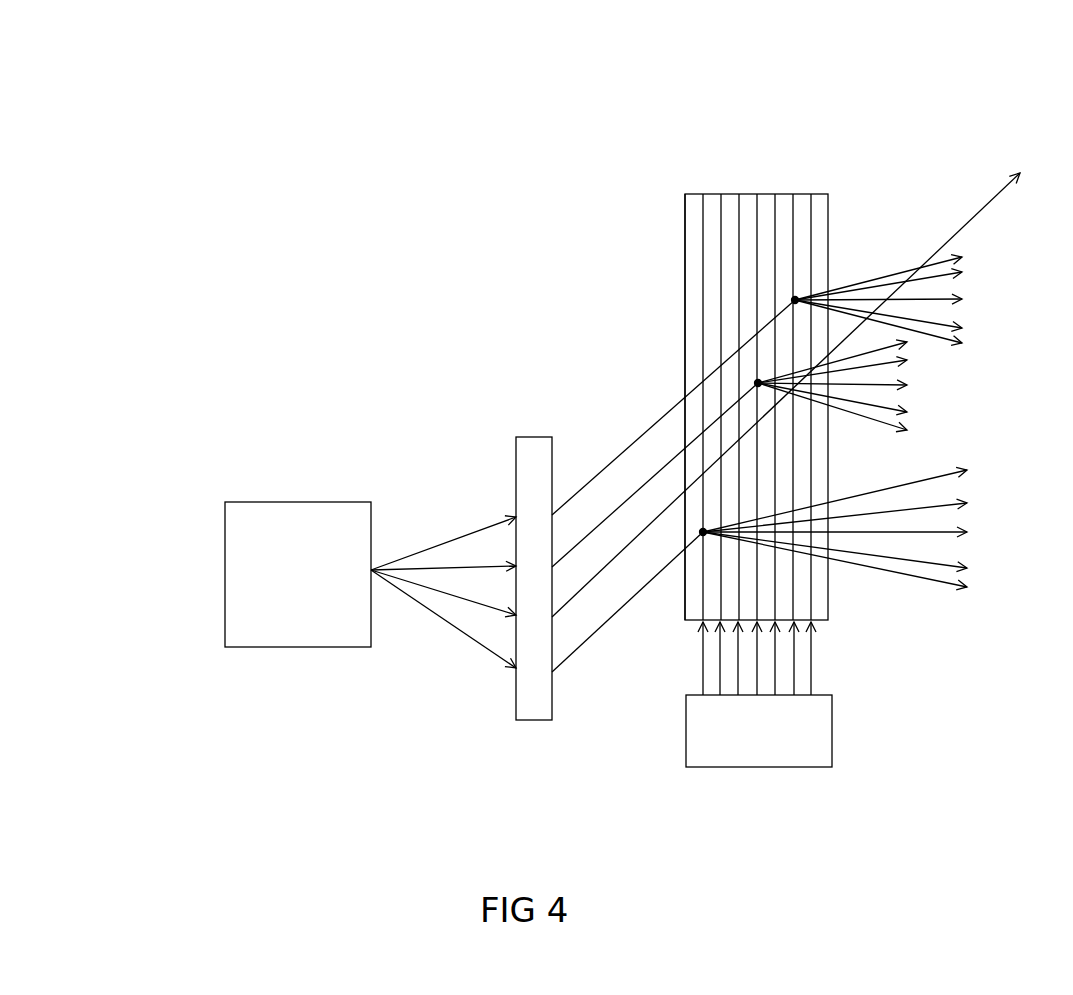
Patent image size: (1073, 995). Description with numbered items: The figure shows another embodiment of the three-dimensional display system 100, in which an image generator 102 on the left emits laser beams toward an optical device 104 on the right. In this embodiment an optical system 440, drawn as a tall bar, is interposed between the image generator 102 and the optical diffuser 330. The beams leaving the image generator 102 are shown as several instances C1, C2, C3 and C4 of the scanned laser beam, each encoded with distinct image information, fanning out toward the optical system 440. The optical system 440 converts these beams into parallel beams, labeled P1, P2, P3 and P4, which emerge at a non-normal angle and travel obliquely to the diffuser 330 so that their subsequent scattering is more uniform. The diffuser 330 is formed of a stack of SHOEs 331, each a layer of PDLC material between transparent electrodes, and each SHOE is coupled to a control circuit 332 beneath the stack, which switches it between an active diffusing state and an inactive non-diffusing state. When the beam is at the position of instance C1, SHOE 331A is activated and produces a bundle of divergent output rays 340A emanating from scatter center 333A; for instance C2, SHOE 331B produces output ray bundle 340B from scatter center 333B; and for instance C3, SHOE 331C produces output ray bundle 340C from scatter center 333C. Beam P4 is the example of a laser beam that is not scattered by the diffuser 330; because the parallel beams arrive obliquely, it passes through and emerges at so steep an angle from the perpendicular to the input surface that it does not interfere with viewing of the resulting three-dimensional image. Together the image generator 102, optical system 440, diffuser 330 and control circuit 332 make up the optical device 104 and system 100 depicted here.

The system 100 is at (385, 262).
The image generator 102 is at (272, 500).
The optical device 104 is at (968, 782).
The optical diffuser 330 is at (772, 333).
The stack of SHOEs 331 is at (635, 373).
The SHOE 331A is at (868, 380).
The SHOE 331B is at (800, 375).
The SHOE 331C is at (731, 378).
The control circuit 332 is at (759, 694).
The scatter center 333A is at (852, 253).
The scatter center 333B is at (682, 328).
The scatter center 333C is at (832, 596).
The output ray bundle 340A is at (975, 244).
The output ray bundle 340B is at (915, 338).
The output ray bundle 340C is at (978, 452).
The optical system 440 is at (541, 538).
The laser beam instance C1 is at (443, 524).
The laser beam instance C2 is at (443, 524).
The laser beam instance C3 is at (443, 631).
The image channel 4 C4 is at (443, 651).
The optical path 1 P1 is at (673, 407).
The optical path 2 P2 is at (655, 454).
The optical path 3 P3 is at (627, 641).
The unscattered laser beam P4 is at (786, 438).